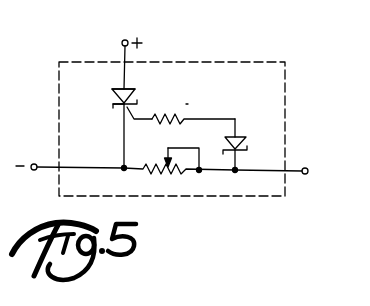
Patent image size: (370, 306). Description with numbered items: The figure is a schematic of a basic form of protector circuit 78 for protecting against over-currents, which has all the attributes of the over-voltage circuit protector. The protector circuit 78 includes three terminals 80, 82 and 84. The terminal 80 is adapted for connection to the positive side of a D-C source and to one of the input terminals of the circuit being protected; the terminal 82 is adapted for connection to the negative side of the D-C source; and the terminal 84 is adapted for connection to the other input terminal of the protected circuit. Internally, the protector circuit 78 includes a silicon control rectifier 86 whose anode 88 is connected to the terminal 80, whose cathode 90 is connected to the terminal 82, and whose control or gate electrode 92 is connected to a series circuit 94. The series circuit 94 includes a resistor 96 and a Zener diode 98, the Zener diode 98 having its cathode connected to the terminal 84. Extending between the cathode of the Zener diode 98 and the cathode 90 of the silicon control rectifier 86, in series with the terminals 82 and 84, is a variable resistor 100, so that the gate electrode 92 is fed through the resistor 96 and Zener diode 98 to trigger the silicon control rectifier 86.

The protector circuit 78 is at (202, 60).
The terminal 80 is at (126, 39).
The terminal 82 is at (37, 146).
The terminal 84 is at (306, 168).
The silicon control rectifier 86 is at (136, 100).
The anode 88 is at (116, 87).
The cathode 90 is at (119, 106).
The control or gate electrode 92 is at (134, 120).
The series circuit 94 is at (214, 106).
The resistor 96 is at (181, 111).
The Zener diode 98 is at (246, 144).
The variable resistor 100 is at (168, 175).